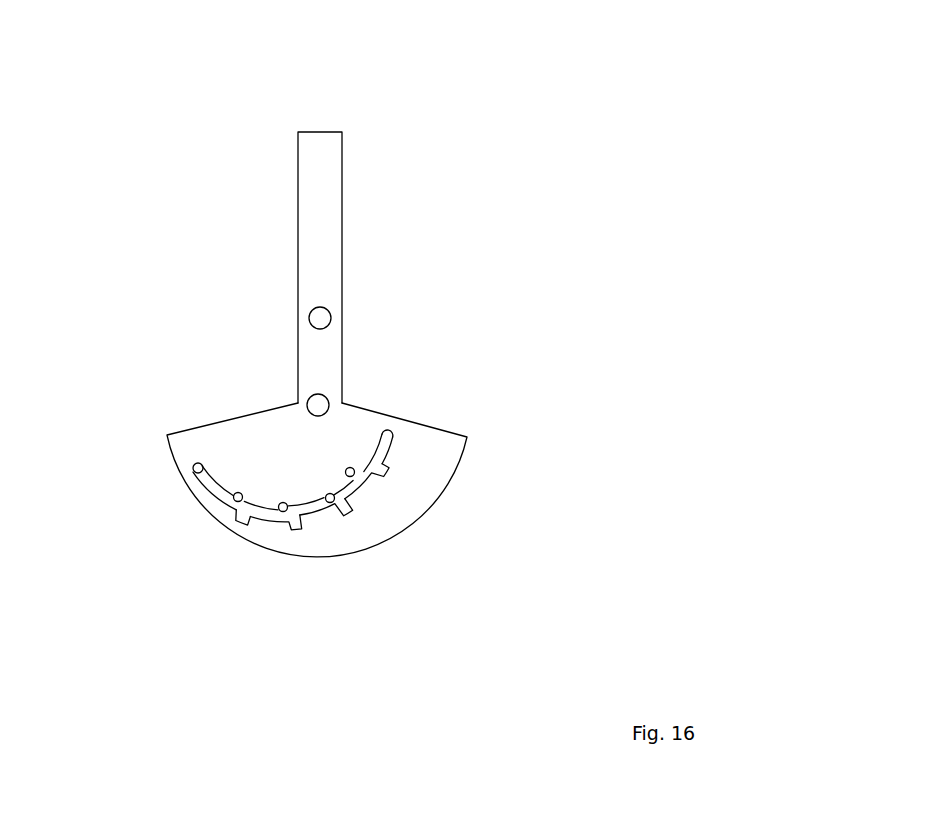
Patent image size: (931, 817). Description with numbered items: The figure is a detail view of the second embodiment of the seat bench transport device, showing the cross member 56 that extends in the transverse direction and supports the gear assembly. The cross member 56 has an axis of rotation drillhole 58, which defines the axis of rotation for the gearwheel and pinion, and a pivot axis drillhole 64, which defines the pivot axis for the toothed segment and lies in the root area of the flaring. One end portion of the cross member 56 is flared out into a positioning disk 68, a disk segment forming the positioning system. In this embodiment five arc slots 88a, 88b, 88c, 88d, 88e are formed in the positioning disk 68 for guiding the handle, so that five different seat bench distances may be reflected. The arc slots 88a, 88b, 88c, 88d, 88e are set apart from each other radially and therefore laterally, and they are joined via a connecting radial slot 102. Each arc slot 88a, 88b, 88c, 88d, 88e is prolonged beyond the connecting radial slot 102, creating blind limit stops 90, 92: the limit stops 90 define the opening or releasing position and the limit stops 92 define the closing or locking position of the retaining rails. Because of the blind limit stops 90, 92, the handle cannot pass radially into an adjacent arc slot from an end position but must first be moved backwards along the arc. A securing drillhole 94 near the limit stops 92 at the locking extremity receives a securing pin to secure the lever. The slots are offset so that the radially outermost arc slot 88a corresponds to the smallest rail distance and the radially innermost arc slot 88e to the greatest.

The cross member 56 is at (44, 40).
The axis of rotation drillhole 58 is at (320, 318).
The pivot axis drillhole 64 is at (318, 405).
The positioning disk 68 is at (403, 503).
The limit stop 92 is at (196, 465).
The securing drillhole 94 is at (199, 471).
The arc slot 88a is at (214, 498).
The arc slot 88b is at (267, 517).
The arc slot 88c is at (318, 515).
The arc slot 88d is at (368, 480).
The arc slot 88e is at (375, 455).
The limit stop 90 is at (246, 524).
The connecting radial slot 102 is at (239, 503).